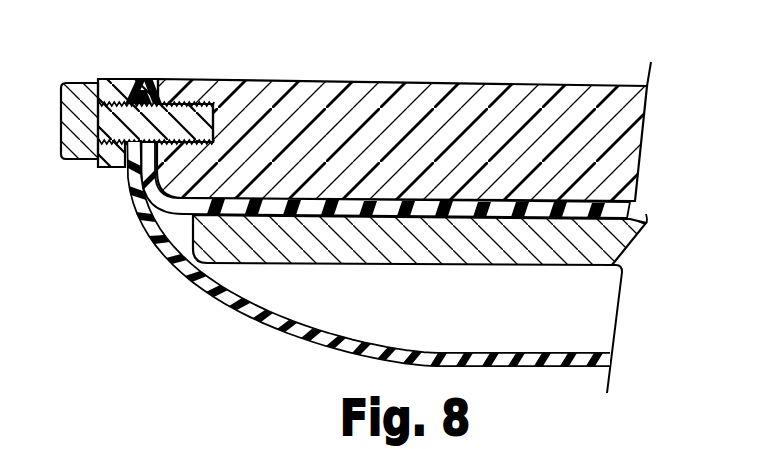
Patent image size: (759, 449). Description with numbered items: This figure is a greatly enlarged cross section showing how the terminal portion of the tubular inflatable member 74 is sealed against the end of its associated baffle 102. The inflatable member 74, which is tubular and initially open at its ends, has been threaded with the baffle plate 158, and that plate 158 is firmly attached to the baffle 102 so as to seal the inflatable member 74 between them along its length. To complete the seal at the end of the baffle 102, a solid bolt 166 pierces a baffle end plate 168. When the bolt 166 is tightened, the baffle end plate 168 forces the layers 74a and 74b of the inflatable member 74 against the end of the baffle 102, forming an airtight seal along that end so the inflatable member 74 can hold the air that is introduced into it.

The solid bolt 166 is at (77, 90).
The baffle end plate 168 is at (115, 87).
The baffle 102 is at (522, 92).
The baffle plate 158 is at (613, 242).
The inflatable member 74 is at (413, 189).
The layer of inflatable member 74a is at (133, 82).
The layer of inflatable member 74b is at (152, 80).